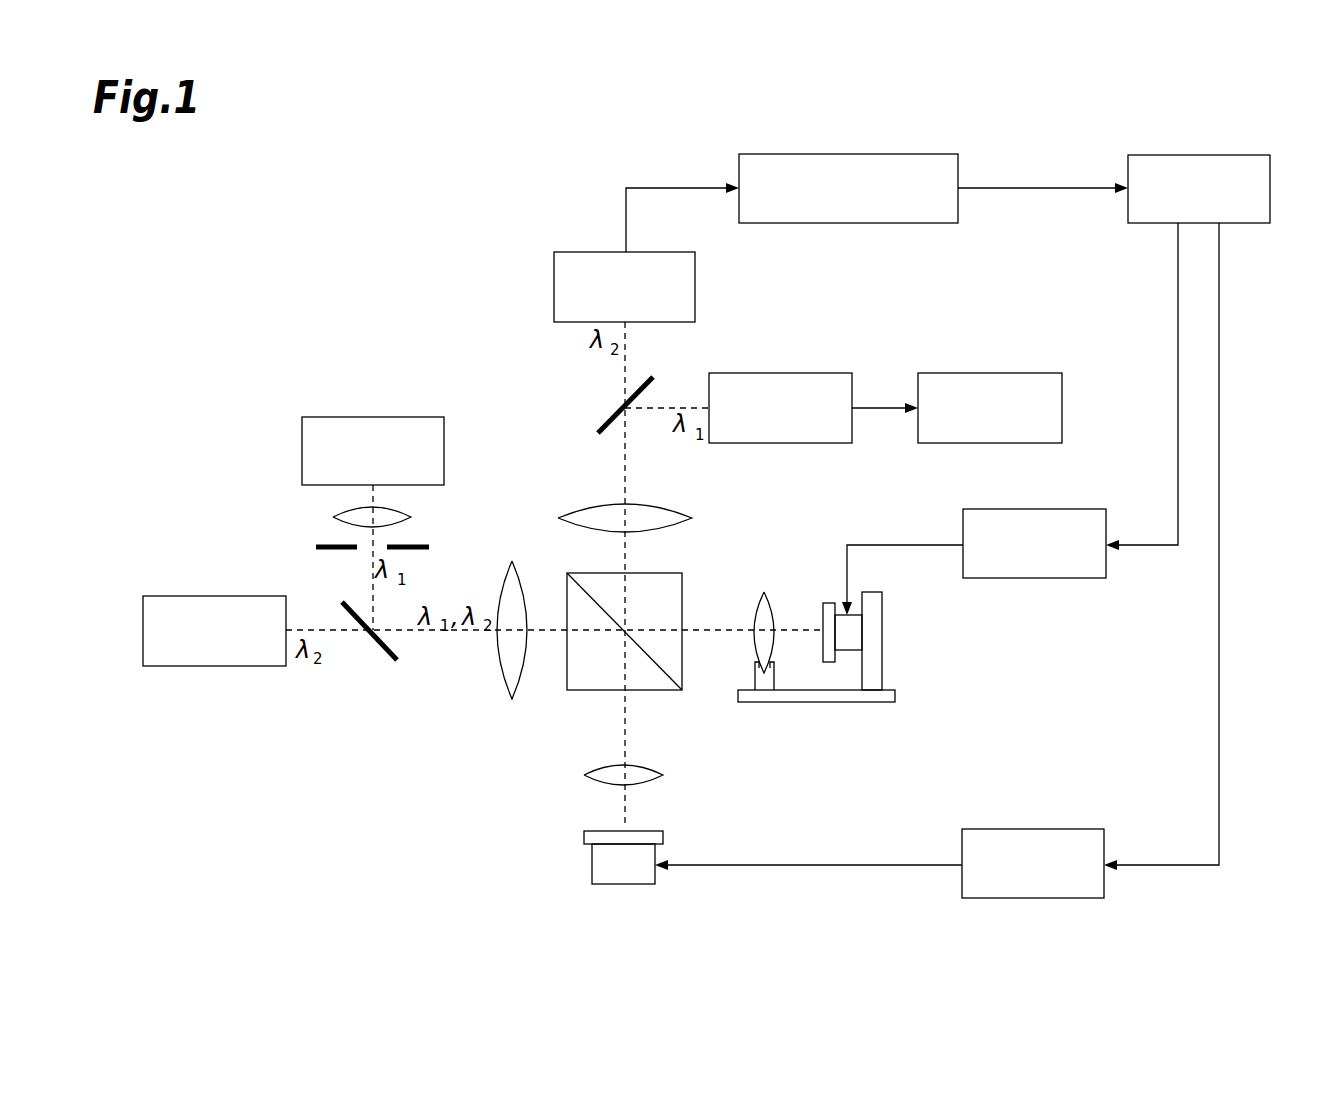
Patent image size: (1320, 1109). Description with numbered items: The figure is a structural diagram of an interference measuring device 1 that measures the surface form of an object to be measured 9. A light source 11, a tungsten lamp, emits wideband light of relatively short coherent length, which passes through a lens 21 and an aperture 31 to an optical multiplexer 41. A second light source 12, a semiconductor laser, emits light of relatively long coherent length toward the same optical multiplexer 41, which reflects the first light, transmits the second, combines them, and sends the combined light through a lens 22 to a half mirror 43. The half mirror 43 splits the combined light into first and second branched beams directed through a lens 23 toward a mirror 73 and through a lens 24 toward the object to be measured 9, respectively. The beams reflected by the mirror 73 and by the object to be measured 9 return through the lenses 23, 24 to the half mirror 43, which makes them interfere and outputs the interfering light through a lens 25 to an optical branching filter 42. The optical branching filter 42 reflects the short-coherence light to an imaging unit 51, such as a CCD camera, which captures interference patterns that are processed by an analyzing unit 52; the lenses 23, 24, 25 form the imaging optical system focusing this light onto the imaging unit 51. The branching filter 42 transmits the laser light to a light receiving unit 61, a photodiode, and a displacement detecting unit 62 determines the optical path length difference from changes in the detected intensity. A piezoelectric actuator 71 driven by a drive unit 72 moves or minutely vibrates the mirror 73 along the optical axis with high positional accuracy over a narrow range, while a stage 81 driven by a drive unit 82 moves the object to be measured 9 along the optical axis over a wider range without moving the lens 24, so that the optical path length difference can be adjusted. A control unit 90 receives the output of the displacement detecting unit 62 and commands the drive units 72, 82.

The interference measuring device 1 is at (215, 255).
The object to be measured 9 is at (648, 830).
The light source 11 is at (373, 416).
The light source 12 is at (216, 595).
The lens 21 is at (334, 515).
The lens 22 is at (498, 656).
The lens 23 is at (757, 606).
The lens 24 is at (655, 770).
The lens 25 is at (590, 503).
The aperture 31 is at (318, 546).
The optical multiplexer 41 is at (382, 656).
The optical branching filter 42 is at (600, 418).
The half mirror 43 is at (660, 692).
The imaging unit 51 is at (788, 372).
The analyzing unit 52 is at (990, 372).
The light receiving unit 61 is at (586, 251).
The displacement detecting unit 62 is at (845, 224).
The piezoelectric actuator 71 is at (836, 611).
The drive unit 72 is at (1036, 508).
The mirror 73 is at (822, 628).
The stage 81 is at (628, 885).
The drive unit 82 is at (1034, 828).
The control unit 90 is at (1243, 224).